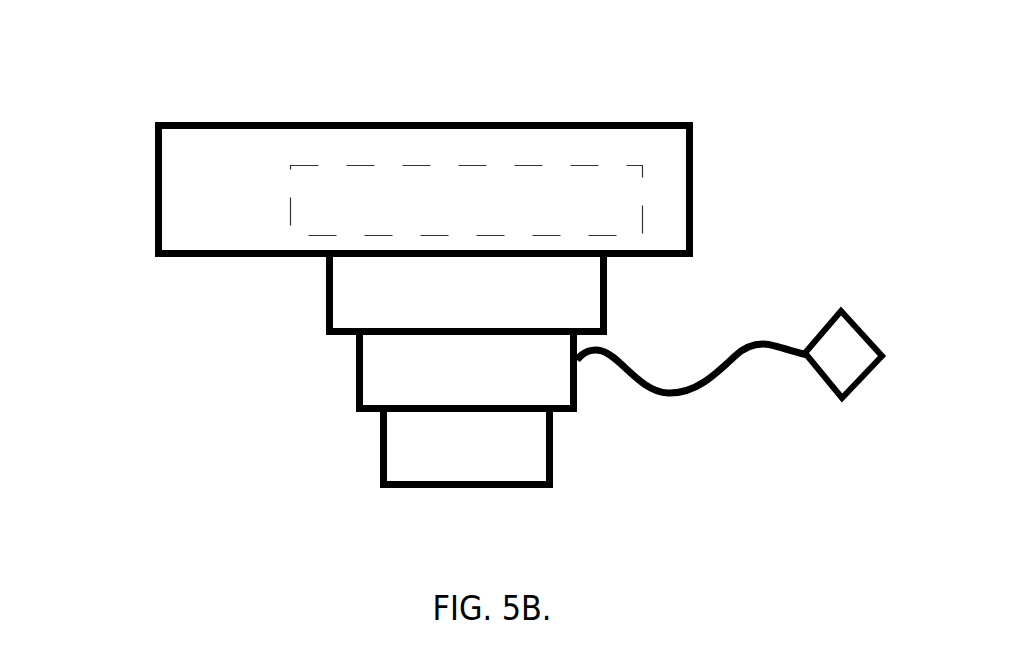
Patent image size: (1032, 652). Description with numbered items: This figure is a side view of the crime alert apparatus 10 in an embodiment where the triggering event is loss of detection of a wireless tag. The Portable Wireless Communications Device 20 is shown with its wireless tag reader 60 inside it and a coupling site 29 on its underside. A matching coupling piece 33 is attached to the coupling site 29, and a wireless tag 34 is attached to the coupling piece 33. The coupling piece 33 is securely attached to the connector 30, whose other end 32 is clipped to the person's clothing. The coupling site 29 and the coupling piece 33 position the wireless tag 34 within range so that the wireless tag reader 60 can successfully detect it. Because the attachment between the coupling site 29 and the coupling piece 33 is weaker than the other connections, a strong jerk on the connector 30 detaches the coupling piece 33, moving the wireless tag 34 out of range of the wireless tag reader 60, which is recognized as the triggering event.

The crime alert apparatus 10 is at (641, 76).
The Portable Wireless Communications Device 20 is at (153, 255).
The coupling site 29 is at (353, 297).
The connector 30 is at (753, 353).
The end 32 is at (835, 355).
The coupling piece 33 is at (388, 372).
The wireless tag 34 is at (410, 437).
The wireless tag reader 60 is at (307, 183).